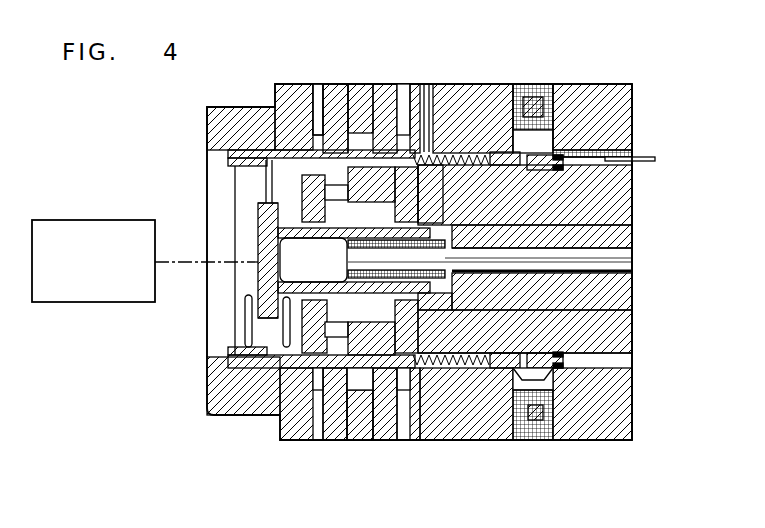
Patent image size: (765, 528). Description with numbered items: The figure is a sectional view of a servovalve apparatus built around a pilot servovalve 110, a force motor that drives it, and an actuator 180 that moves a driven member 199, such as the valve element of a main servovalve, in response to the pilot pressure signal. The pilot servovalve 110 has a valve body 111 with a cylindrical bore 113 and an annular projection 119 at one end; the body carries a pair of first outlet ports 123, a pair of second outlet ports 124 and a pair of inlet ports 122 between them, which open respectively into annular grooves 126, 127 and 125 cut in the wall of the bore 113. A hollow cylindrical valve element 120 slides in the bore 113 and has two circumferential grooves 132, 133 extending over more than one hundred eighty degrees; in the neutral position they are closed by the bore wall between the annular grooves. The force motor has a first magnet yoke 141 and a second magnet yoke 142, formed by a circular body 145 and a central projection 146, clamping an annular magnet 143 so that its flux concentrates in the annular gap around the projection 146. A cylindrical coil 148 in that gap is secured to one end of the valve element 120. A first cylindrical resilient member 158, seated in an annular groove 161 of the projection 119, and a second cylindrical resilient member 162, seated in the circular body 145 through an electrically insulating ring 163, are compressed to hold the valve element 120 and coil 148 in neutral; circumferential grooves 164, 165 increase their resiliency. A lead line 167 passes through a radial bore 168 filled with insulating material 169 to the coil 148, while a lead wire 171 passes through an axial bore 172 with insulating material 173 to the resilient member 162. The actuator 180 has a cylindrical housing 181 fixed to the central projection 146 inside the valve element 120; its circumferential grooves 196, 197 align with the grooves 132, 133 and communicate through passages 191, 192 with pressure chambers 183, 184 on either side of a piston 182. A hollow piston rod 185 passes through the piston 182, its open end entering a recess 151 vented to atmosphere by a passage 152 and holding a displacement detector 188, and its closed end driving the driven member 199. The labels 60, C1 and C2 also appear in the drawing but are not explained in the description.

The slot 60 is at (334, 100).
The pilot servovalve 110 is at (250, 100).
The valve body 111 is at (290, 90).
The cylindrical bore 113 is at (262, 140).
The annular projection 119 is at (235, 356).
The hollow cylindrical valve element 120 is at (308, 398).
The inlet ports 122 is at (360, 115).
The first outlet ports 123 is at (318, 112).
The second outlet ports 124 is at (402, 100).
The annular groove 125 is at (380, 100).
The annular groove 126 is at (283, 105).
The annular groove 127 is at (392, 112).
The circumferential groove 132 is at (318, 392).
The circumferential groove 133 is at (366, 396).
The first magnet yoke 141 is at (500, 86).
The second magnet yoke 142 is at (631, 84).
The annular magnet 143 is at (548, 88).
The circular body 145 is at (585, 94).
The central projection 146 is at (525, 222).
The cylindrical coil 148 is at (526, 96).
The recess 151 is at (452, 236).
The passage 152 is at (625, 303).
The first cylindrical resilient member 158 is at (243, 154).
The annular groove 161 is at (232, 396).
The second cylindrical resilient member 162 is at (585, 122).
The electrically insulating ring 163 is at (566, 360).
The circumferential grooves 164 is at (252, 163).
The circumferential grooves 165 is at (538, 162).
The lead line 167 is at (427, 92).
The radial bore 168 is at (462, 102).
The electrically insulating material 169 is at (431, 98).
The lead wire 171 is at (655, 162).
The axial bore 172 is at (610, 152).
The electrically insulating material 173 is at (632, 152).
The actuator 180 is at (255, 282).
The cylindrical housing 181 is at (268, 186).
The piston 182 is at (354, 250).
The pressure chamber 183 is at (333, 206).
The pressure chamber 184 is at (404, 322).
The hollow cylindrical piston rod 185 is at (262, 226).
The displacement detector 188 is at (437, 276).
The passages 191 is at (332, 318).
The passages 192 is at (430, 352).
The circumferential groove 196 is at (342, 396).
The circumferential groove 197 is at (404, 396).
The driven member 199 is at (88, 220).
The first clutch C1 is at (318, 170).
The second clutch C2 is at (408, 172).